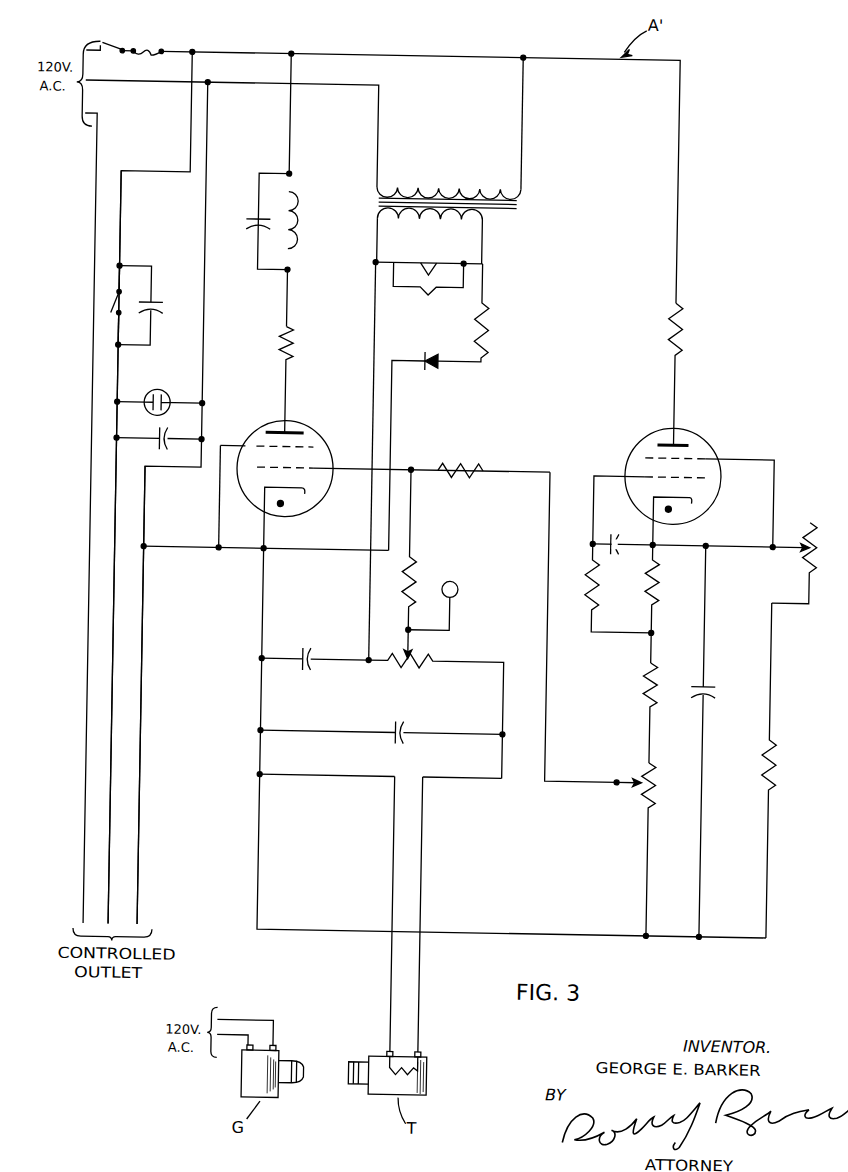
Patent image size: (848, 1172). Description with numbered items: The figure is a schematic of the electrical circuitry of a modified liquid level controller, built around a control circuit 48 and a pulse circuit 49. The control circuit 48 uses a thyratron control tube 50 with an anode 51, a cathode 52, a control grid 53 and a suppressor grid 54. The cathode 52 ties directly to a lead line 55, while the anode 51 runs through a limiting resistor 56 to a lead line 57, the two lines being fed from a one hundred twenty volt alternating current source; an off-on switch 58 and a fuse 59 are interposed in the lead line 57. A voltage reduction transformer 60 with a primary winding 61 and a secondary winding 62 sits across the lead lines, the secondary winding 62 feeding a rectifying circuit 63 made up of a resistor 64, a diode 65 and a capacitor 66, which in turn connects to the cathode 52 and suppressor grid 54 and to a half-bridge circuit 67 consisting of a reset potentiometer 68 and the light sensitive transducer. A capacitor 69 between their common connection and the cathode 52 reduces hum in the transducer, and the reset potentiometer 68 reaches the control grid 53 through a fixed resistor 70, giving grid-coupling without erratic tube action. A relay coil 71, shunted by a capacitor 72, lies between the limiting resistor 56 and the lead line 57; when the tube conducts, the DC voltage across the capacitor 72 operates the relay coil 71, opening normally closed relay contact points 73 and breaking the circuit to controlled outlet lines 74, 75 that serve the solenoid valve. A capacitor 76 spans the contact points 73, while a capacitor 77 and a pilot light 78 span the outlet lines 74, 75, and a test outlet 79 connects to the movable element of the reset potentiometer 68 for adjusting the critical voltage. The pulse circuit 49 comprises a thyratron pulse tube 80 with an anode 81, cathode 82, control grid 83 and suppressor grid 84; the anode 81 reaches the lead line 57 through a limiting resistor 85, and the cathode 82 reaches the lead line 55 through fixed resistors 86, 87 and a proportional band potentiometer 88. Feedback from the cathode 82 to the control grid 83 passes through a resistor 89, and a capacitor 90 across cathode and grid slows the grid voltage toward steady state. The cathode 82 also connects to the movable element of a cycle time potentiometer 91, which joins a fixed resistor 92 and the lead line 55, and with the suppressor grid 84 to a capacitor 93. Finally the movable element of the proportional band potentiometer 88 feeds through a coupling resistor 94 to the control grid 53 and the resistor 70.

The control circuit 48 is at (385, 466).
The pulse circuit 49 is at (684, 458).
The thyratron control tube 50 is at (318, 432).
The anode 51 is at (262, 433).
The cathode 52 is at (302, 498).
The control grid 53 is at (305, 478).
The suppressor grid 54 is at (310, 449).
The lead line 55 is at (373, 111).
The limiting resistor 56 is at (290, 333).
The lead line 57 is at (478, 56).
The off-on switch 58 is at (100, 48).
The fuse 59 is at (140, 55).
The voltage reduction transformer 60 is at (481, 210).
The primary winding 61 is at (431, 186).
The secondary winding 62 is at (516, 200).
The rectifying circuit 63 is at (484, 291).
The resistor 64 is at (485, 329).
The diode 65 is at (430, 370).
The capacitor 66 is at (311, 673).
The half-bridge circuit 67 is at (488, 659).
The reset potentiometer 68 is at (410, 665).
The capacitor 69 is at (401, 720).
The fixed resistor 70 is at (414, 566).
The relay coil 71 is at (291, 232).
The capacitor 72 is at (241, 225).
The normally closed relay contact points 73 is at (105, 309).
The controlled outlet line 74 is at (144, 925).
The controlled outlet line 75 is at (89, 928).
The capacitor 76 is at (160, 312).
The capacitor 77 is at (161, 456).
The pilot light 78 is at (148, 395).
The test outlet 79 is at (456, 583).
The thyratron pulse tube 80 is at (706, 436).
The anode 81 is at (660, 440).
The cathode 82 is at (689, 512).
The control grid 83 is at (645, 474).
The suppressor grid 84 is at (645, 455).
The limiting resistor 85 is at (678, 336).
The fixed resistor 86 is at (657, 590).
The fixed resistor 87 is at (653, 678).
The proportional band potentiometer 88 is at (648, 800).
The resistor 89 is at (588, 585).
The capacitor 90 is at (612, 552).
The cycle time potentiometer 91 is at (806, 526).
The fixed resistor 92 is at (776, 765).
The capacitor 93 is at (716, 684).
The coupling resistor 94 is at (455, 466).